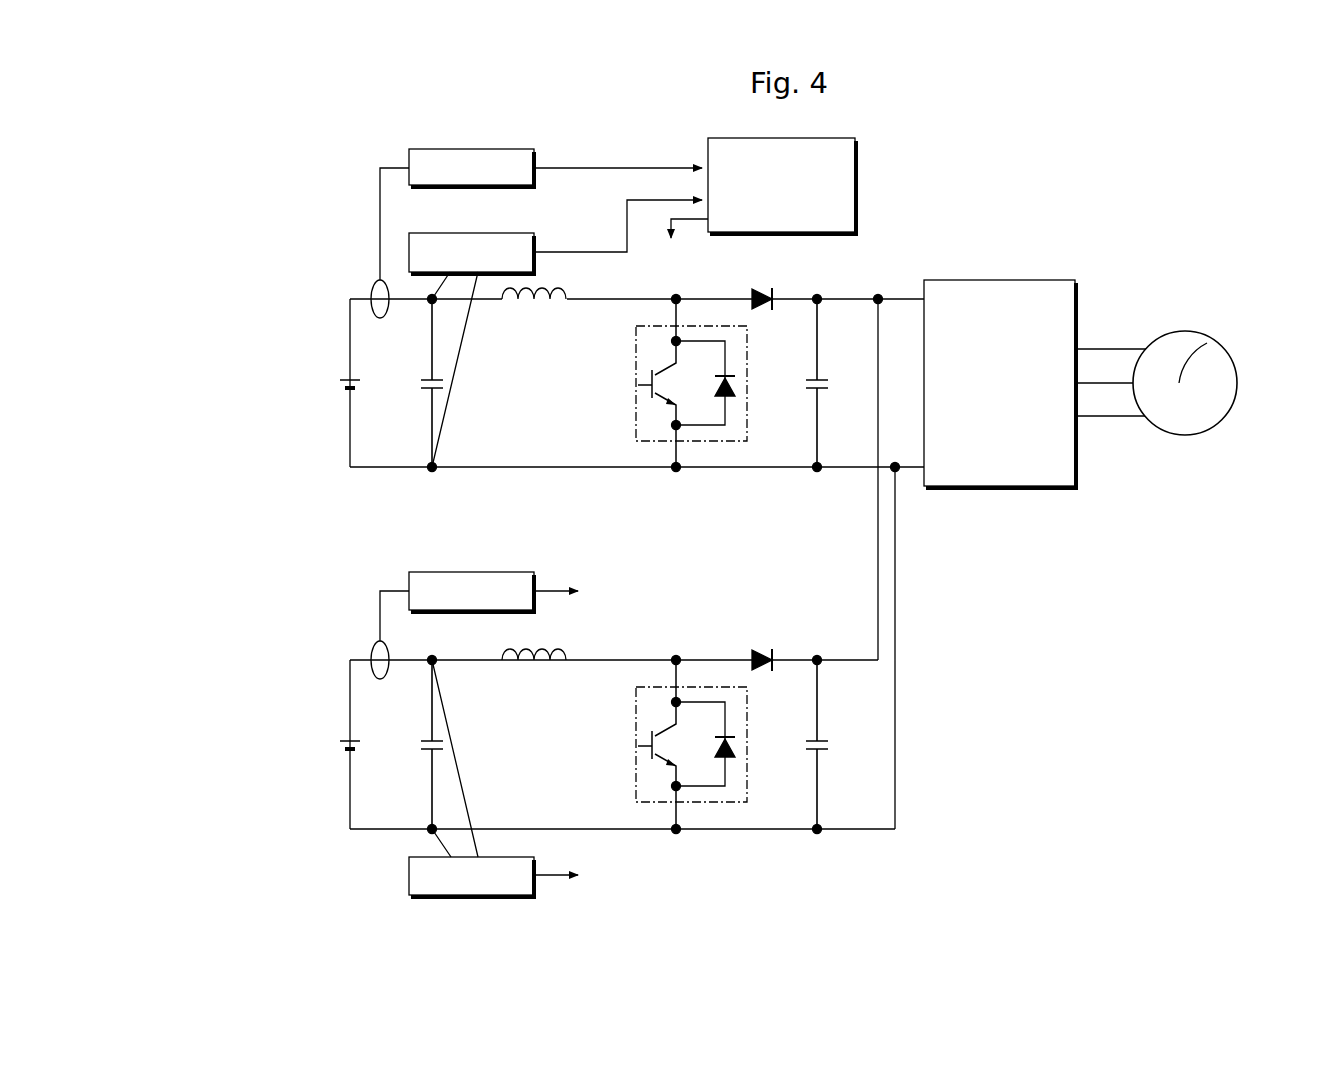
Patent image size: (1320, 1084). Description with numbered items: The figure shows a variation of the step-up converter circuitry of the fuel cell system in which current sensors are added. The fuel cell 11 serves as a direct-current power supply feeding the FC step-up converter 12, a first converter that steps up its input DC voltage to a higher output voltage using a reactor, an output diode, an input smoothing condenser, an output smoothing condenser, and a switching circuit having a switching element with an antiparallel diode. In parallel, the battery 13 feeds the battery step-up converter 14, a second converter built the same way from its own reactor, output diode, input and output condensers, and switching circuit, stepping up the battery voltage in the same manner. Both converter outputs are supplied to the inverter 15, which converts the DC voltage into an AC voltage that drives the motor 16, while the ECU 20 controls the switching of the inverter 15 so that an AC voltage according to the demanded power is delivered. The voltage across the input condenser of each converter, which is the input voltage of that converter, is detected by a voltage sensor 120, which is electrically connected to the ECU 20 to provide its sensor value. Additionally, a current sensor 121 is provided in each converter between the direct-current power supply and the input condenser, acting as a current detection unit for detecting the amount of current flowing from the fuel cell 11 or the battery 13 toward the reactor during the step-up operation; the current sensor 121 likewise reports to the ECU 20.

The fuel cell 11 is at (327, 757).
The FC step-up converter 12 is at (746, 855).
The battery 13 is at (327, 397).
The battery step-up converter 14 is at (702, 492).
The inverter 15 is at (992, 280).
The motor 16 is at (1238, 383).
The ECU 20 is at (857, 162).
The voltage sensor 120 is at (536, 244).
The current sensor 121 is at (536, 160).